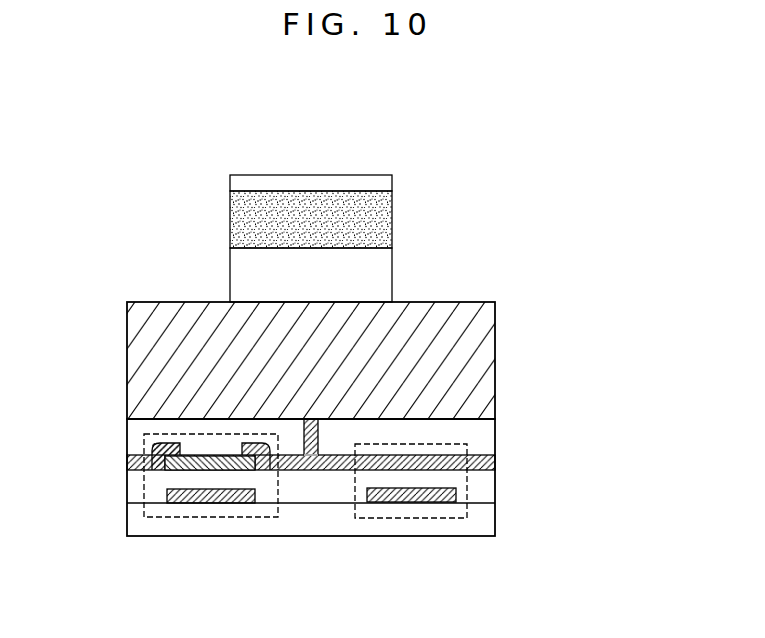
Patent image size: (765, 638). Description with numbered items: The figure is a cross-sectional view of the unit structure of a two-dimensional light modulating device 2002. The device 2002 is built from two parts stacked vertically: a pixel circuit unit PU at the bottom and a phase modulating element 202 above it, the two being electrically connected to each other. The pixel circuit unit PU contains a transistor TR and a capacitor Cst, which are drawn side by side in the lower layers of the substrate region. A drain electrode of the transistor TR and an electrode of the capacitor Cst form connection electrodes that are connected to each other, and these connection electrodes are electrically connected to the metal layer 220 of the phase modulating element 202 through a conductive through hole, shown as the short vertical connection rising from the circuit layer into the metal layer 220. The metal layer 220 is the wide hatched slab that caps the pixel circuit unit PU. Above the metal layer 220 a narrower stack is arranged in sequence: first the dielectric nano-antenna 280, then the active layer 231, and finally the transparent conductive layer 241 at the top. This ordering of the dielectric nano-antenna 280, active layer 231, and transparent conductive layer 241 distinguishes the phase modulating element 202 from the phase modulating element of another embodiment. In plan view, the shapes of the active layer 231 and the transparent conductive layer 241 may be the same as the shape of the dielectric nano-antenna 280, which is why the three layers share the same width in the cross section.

The 2D light modulating device 2002 is at (420, 325).
The phase modulating element 202 is at (379, 291).
The transparent conductive layer 241 is at (385, 184).
The active layer 231 is at (392, 222).
The dielectric nano-antenna 280 is at (383, 276).
The metal layer 220 is at (349, 360).
The pixel circuit unit PU is at (375, 503).
The transistor TR is at (210, 517).
The capacitor Cst is at (410, 518).